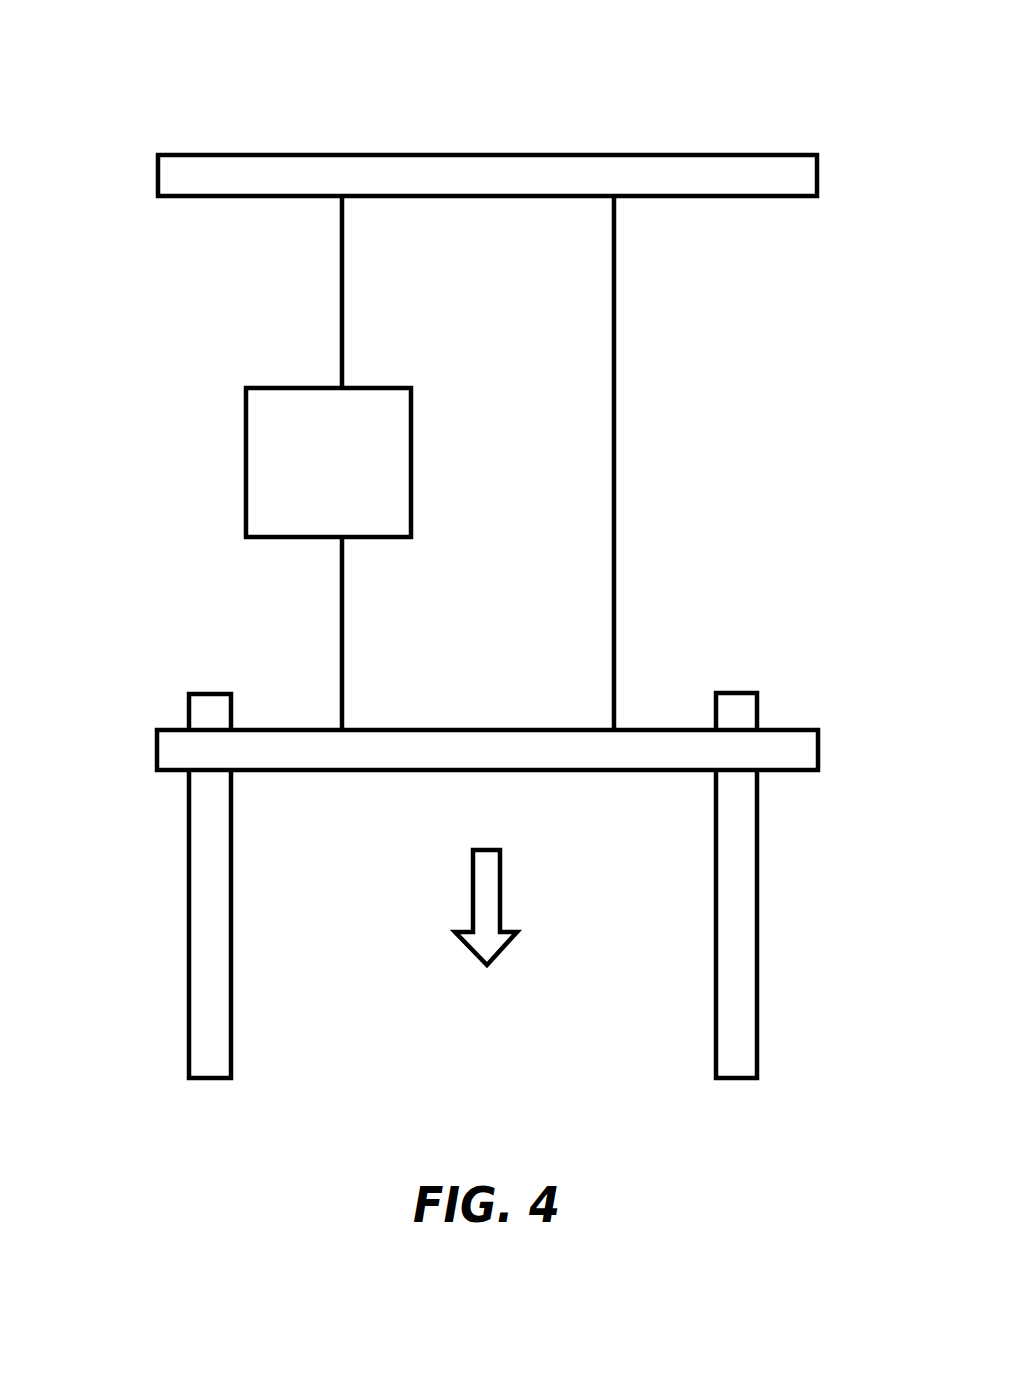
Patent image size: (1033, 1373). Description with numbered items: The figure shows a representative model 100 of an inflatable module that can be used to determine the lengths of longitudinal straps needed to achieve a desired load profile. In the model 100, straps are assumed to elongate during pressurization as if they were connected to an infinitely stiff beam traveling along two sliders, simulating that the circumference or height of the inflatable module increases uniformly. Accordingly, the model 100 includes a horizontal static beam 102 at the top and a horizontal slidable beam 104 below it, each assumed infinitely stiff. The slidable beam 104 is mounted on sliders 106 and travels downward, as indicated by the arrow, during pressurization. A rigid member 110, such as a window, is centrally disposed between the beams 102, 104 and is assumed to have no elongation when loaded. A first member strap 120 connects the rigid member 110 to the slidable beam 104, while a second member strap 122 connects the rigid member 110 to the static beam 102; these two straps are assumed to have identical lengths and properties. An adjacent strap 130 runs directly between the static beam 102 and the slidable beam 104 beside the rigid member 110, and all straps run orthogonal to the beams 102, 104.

The model 100 is at (606, 96).
The horizontal static beam 102 is at (666, 155).
The horizontal slidable beam 104 is at (782, 730).
The sliders 106 is at (188, 910).
The rigid member 110 is at (297, 388).
The first member strap 120 is at (341, 634).
The second member strap 122 is at (340, 305).
The adjacent strap 130 is at (616, 304).